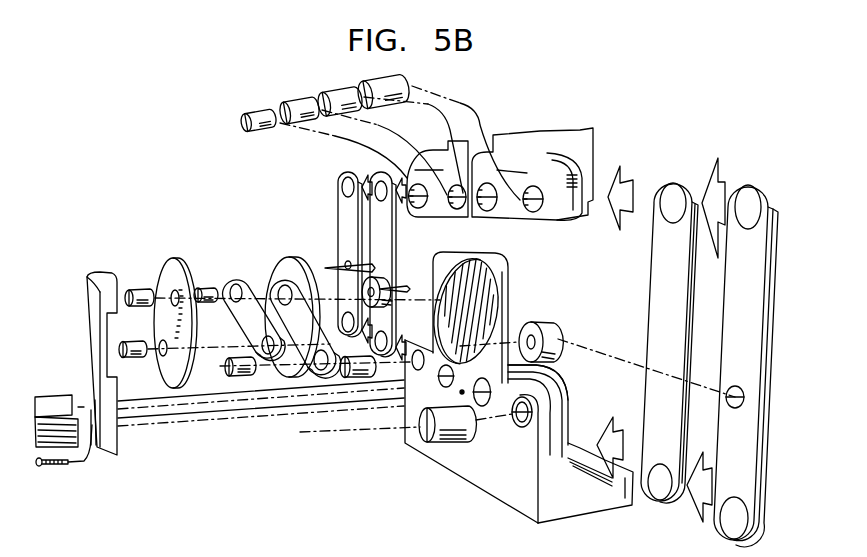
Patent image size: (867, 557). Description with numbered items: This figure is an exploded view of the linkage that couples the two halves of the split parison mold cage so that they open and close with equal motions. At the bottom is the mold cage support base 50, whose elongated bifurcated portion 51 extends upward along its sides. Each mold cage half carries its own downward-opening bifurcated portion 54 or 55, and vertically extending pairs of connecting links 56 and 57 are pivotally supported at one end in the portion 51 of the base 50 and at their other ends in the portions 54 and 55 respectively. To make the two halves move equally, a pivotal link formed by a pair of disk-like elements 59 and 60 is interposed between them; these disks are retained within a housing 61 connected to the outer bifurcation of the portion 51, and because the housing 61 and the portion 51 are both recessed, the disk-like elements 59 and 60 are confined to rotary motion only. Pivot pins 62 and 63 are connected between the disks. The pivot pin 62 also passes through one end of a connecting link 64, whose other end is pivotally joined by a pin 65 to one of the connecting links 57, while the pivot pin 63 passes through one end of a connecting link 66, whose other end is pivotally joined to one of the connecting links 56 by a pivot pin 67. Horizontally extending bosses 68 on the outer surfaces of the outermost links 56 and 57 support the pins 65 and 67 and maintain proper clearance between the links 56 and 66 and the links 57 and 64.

The mold cage support base 50 is at (497, 492).
The bifurcated portion 51 is at (538, 425).
The bifurcated portion 54 is at (458, 121).
The bifurcated portion 55 is at (590, 140).
The connecting links 56 is at (378, 222).
The connecting links 57 is at (737, 312).
The disk-like element 59 is at (282, 266).
The disk-like element 60 is at (180, 228).
The housing 61 is at (96, 448).
The pivot pin 62 is at (128, 296).
The pivot pin 63 is at (124, 354).
The connecting link 64 is at (305, 329).
The pin 65 is at (227, 373).
The connecting link 66 is at (254, 320).
The pivot pin 67 is at (199, 289).
The bosses 68 is at (378, 283).